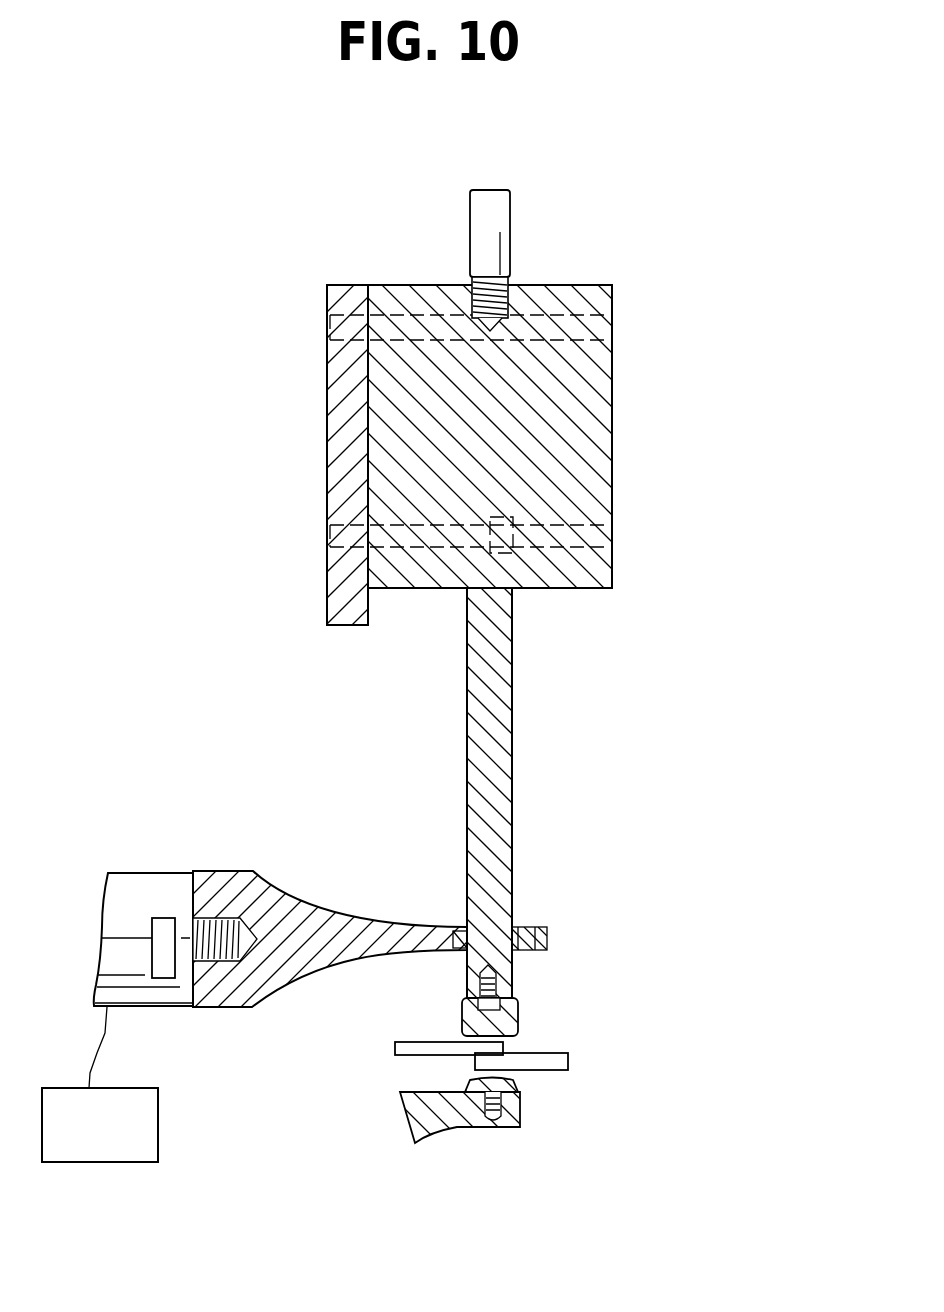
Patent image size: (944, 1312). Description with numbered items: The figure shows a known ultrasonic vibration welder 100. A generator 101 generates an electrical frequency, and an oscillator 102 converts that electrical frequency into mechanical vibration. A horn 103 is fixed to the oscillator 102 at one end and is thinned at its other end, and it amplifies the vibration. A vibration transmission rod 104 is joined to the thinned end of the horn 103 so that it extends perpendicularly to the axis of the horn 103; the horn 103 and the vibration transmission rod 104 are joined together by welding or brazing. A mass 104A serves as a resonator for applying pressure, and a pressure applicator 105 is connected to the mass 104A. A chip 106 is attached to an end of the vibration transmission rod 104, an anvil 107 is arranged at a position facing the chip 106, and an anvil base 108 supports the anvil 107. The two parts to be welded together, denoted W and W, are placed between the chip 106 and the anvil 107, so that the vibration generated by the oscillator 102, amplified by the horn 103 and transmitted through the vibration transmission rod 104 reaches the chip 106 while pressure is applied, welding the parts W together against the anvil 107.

The ultrasonic vibration welder 100 is at (253, 558).
The generator 101 is at (108, 1137).
The oscillator 102 is at (159, 876).
The horn 103 is at (300, 912).
The vibration transmission rod 104 is at (500, 740).
The mass 104A is at (600, 425).
The pressure applicator 105 is at (497, 226).
The chip 106 is at (518, 1017).
The anvil 107 is at (518, 1084).
The anvil base 108 is at (520, 1113).
The parts to be welded W is at (395, 1046).